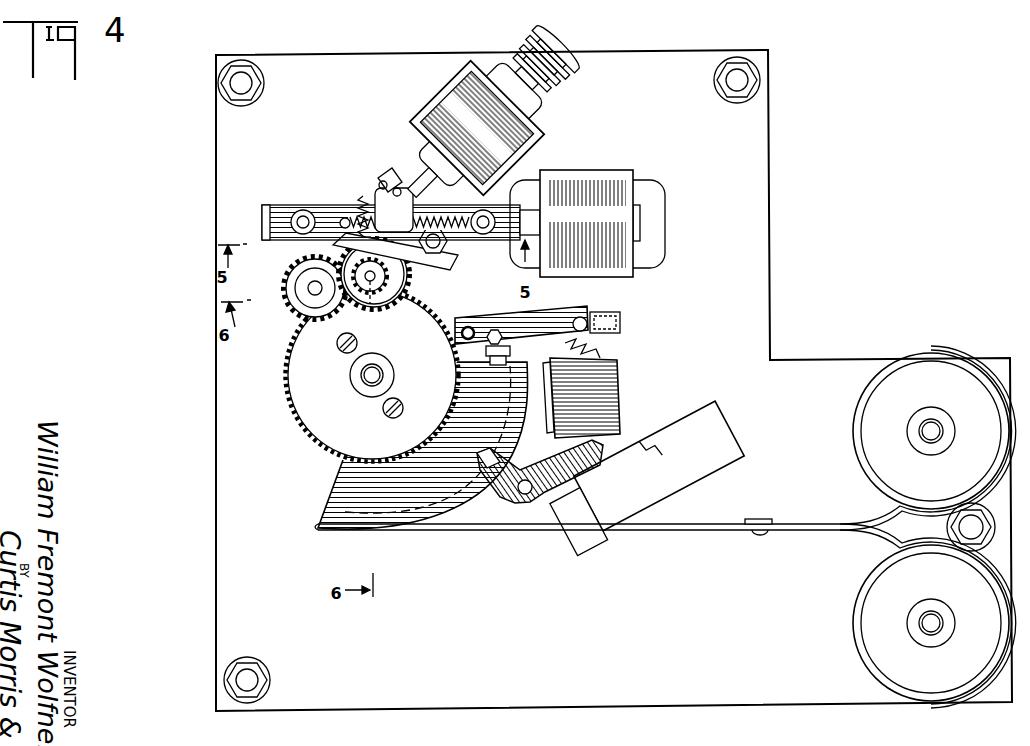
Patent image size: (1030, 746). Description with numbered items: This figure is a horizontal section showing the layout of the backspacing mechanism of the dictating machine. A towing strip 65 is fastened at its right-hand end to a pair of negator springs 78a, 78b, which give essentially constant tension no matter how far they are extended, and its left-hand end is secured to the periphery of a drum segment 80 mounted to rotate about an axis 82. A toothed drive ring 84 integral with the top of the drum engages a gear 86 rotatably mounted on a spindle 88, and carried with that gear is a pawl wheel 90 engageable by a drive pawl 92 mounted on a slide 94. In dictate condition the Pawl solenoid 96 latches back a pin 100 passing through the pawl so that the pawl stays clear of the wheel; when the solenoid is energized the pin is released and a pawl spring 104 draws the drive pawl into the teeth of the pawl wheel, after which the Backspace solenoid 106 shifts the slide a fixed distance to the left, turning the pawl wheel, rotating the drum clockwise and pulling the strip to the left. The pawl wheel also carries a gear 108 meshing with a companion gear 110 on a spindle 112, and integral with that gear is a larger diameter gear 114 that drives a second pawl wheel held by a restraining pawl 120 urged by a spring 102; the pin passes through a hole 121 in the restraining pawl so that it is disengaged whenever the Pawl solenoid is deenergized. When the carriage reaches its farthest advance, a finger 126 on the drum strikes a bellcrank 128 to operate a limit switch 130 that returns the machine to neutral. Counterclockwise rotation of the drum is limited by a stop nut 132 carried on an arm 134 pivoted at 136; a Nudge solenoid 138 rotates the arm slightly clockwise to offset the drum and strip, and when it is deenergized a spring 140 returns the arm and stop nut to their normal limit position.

The towing strip 65 is at (522, 536).
The negator spring 78a is at (880, 413).
The negator spring 78b is at (878, 625).
The drum segment 80 is at (352, 494).
The axis 82 is at (363, 375).
The toothed drive ring 84 is at (300, 401).
The gear 86 is at (373, 285).
The spindle 88 is at (336, 275).
The pawl wheel 90 is at (398, 266).
The drive pawl 92 is at (440, 255).
The slide 94 is at (283, 215).
The Pawl solenoid 96 is at (458, 101).
The pin 100 is at (406, 196).
The spring 102 is at (362, 197).
The pawl spring 104 is at (394, 210).
The Backspace solenoid 106 is at (592, 183).
The gear 108 is at (408, 282).
The companion gear 110 is at (300, 301).
The spindle 112 is at (317, 296).
The larger diameter gear 114 is at (295, 270).
The restraining pawl 120 is at (382, 181).
The hole 121 is at (399, 188).
The finger 126 is at (479, 472).
The bellcrank 128 is at (541, 472).
The limit switch 130 is at (653, 488).
The stop nut 132 is at (498, 366).
The arm 134 is at (540, 322).
The pivot 136 is at (470, 326).
The Nudge solenoid 138 is at (603, 396).
The spring 140 is at (602, 353).